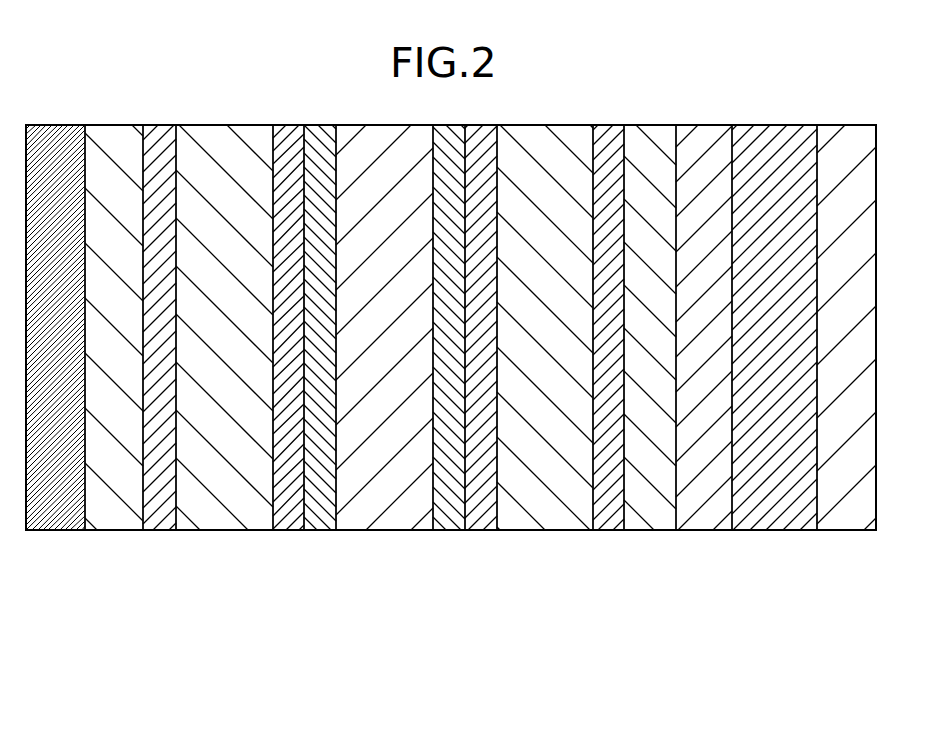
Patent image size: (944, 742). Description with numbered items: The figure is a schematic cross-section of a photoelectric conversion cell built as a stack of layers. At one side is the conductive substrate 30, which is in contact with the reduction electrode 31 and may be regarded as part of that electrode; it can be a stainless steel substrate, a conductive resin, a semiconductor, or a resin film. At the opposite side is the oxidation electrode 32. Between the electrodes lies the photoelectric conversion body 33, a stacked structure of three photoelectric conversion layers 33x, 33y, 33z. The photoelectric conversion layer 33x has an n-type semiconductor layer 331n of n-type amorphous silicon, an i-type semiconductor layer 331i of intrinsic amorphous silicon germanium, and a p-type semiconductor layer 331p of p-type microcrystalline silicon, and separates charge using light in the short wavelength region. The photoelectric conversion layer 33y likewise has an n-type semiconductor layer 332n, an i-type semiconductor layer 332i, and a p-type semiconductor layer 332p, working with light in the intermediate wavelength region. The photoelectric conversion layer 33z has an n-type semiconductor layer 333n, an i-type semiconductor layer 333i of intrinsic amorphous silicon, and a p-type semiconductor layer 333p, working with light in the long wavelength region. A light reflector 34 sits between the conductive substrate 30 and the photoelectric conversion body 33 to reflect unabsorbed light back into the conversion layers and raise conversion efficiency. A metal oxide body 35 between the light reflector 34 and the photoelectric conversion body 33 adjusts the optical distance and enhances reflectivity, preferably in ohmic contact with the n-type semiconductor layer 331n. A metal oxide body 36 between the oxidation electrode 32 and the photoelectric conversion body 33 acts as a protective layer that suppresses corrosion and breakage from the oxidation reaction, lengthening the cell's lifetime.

The conductive substrate 30 is at (775, 505).
The reduction electrode 31 is at (847, 505).
The oxidation electrode 32 is at (60, 505).
The photoelectric conversion body 33 is at (615, 655).
The photoelectric conversion layer 33x is at (617, 607).
The photoelectric conversion layer 33y is at (455, 607).
The photoelectric conversion layer 33z is at (292, 607).
The p-type semiconductor layer 331p is at (485, 505).
The i-type semiconductor layer 331i is at (548, 505).
The n-type semiconductor layer 331n is at (612, 505).
The p-type semiconductor layer 332p is at (325, 505).
The i-type semiconductor layer 332i is at (388, 505).
The n-type semiconductor layer 332n is at (447, 505).
The p-type semiconductor layer 333p is at (165, 505).
The i-type semiconductor layer 333i is at (230, 505).
The n-type semiconductor layer 333n is at (293, 505).
The light reflector 34 is at (708, 505).
The metal oxide body 35 is at (650, 505).
The metal oxide body 36 is at (125, 505).